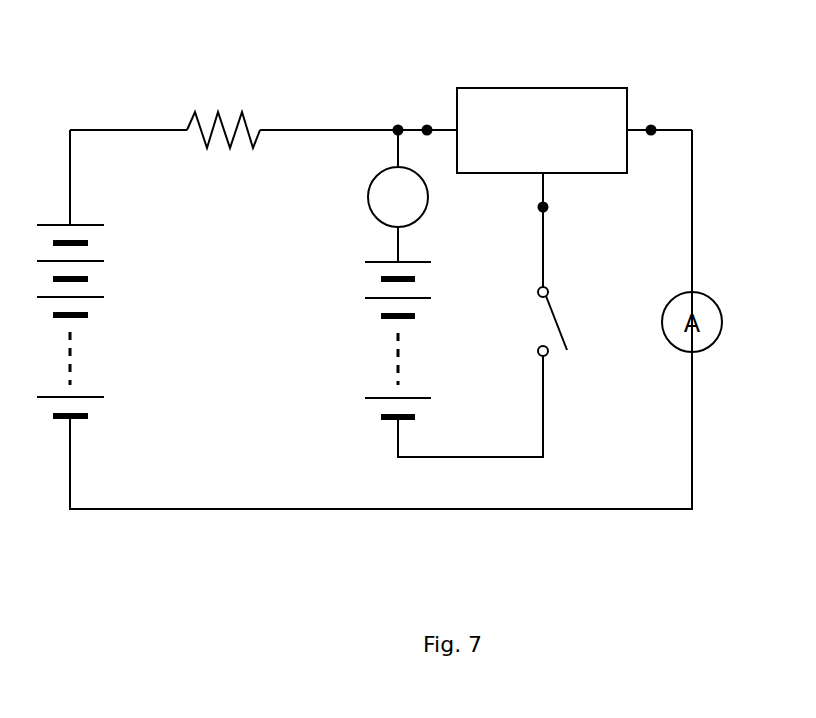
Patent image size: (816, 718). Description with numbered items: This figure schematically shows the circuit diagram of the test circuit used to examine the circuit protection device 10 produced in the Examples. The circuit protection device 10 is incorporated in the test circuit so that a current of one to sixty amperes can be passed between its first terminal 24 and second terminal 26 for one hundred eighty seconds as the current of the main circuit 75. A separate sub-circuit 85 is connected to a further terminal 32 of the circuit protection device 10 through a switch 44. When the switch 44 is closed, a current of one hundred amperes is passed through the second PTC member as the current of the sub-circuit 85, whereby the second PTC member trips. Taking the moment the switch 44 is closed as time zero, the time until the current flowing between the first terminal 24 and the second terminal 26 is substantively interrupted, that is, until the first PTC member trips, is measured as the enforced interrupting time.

The circuit protection device 10 is at (545, 88).
The first terminal 24 is at (427, 126).
The second terminal 26 is at (652, 128).
The third terminal 32 is at (548, 207).
The switch 44 is at (556, 318).
The main circuit 75 is at (250, 511).
The sub-circuit 85 is at (543, 426).